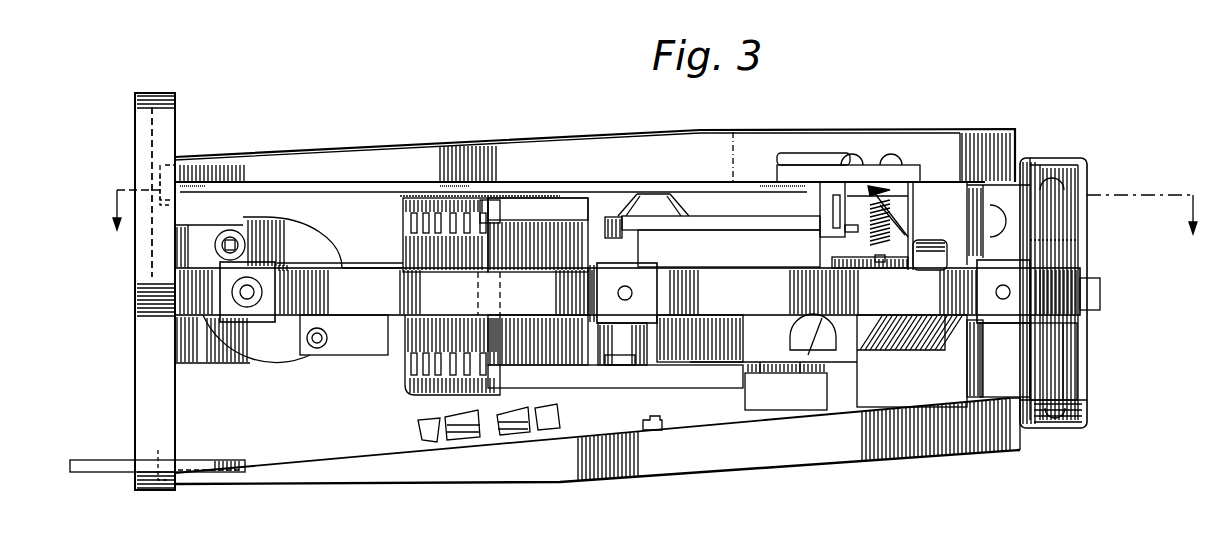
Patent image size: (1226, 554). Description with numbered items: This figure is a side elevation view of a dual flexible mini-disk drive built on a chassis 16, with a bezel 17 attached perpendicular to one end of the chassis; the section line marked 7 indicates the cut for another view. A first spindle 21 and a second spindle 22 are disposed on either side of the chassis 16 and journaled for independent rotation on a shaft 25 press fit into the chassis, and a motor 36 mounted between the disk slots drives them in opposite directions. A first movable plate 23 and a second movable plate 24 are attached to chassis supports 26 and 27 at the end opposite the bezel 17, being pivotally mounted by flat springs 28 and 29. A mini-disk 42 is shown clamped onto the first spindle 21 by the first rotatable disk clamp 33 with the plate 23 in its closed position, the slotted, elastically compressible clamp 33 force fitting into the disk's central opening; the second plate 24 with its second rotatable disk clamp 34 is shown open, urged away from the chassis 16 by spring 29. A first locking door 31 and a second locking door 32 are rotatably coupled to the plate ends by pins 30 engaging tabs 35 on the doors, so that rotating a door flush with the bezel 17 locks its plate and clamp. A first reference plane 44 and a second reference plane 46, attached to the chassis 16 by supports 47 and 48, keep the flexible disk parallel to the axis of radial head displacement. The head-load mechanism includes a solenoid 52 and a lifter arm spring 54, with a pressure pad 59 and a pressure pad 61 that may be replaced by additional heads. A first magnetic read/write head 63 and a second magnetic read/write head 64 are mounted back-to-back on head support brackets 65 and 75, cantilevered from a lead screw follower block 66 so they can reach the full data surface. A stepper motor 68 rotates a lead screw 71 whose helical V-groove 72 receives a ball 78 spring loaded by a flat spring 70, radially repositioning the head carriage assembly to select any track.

The section line 7- 7 is at (650, 201).
The chassis 16 is at (182, 297).
The bezel 17 is at (150, 105).
The first spindle 21 is at (415, 240).
The second spindle 22 is at (405, 370).
The first movable plate 23 is at (500, 142).
The second movable plate 24 is at (590, 483).
The shaft 25 is at (470, 318).
The chassis support 26 is at (1075, 243).
The chassis support 27 is at (1068, 376).
The flat spring 28 is at (1025, 160).
The flat spring 29 is at (992, 406).
The pins 30 is at (172, 200).
The first locking door 31 is at (148, 147).
The second locking door 32 is at (100, 473).
The first rotatable disk clamp 33 is at (520, 193).
The second rotatable disk clamp 34 is at (480, 440).
The tabs 35 is at (158, 212).
The motor 36 is at (305, 237).
The mini-disk 42 is at (213, 196).
The first reference plane 44 is at (520, 230).
The second reference plane 46 is at (590, 384).
The support 47 is at (575, 272).
The support 48 is at (630, 310).
The solenoid 52 is at (900, 200).
The lifter arm spring 54 is at (888, 230).
The pressure pad 59 is at (678, 180).
The pressure pad 61 is at (642, 430).
The first magnetic read/write head 63 is at (680, 202).
The second magnetic read/write head 64 is at (660, 390).
The head support bracket 65 is at (605, 228).
The lead screw follower block 66 is at (660, 242).
The stepper motor 68 is at (1082, 418).
The flat spring 70 is at (830, 362).
The lead screw 71 is at (890, 352).
The V-groove 72 is at (810, 335).
The head support bracket 75 is at (620, 355).
The ball 78 is at (815, 360).